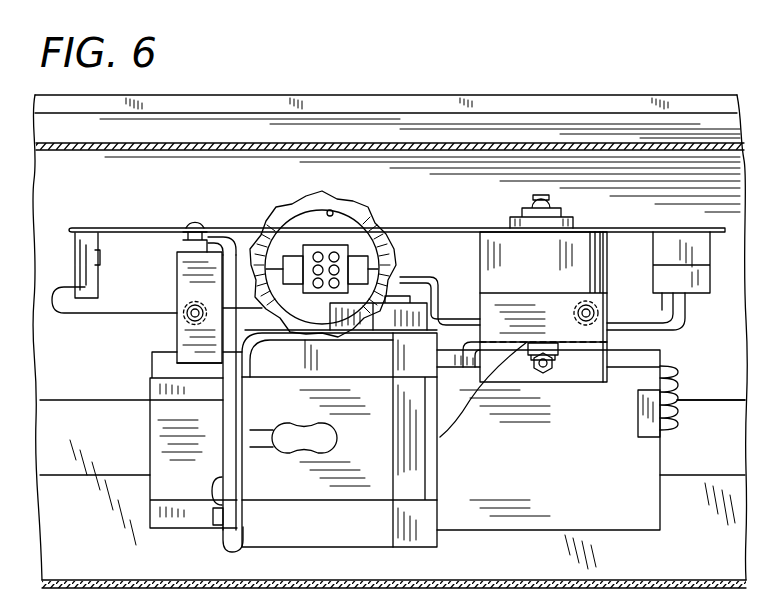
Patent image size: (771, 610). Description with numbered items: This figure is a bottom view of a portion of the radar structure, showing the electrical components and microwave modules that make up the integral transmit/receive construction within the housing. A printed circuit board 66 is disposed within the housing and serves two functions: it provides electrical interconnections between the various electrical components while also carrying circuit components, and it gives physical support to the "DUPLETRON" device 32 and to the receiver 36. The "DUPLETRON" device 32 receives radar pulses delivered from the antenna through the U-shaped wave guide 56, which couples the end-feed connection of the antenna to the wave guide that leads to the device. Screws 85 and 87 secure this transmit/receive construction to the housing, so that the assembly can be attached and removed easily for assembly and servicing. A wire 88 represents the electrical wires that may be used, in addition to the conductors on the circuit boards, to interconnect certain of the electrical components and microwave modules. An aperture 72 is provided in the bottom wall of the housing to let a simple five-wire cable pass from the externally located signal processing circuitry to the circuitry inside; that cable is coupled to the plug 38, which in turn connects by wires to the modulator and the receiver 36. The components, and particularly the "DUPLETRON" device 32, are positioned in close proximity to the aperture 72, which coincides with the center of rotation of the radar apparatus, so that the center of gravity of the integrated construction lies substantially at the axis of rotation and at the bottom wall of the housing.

The "DUPLETRON" device 32 is at (274, 493).
The receiver 36 is at (177, 266).
The plug 38 is at (312, 247).
The U-shaped wave guide 56 is at (724, 407).
The printed circuit board 66 is at (450, 225).
The aperture 72 is at (331, 210).
The screw 85 is at (596, 310).
The screw 87 is at (190, 306).
The wire 88 is at (677, 411).